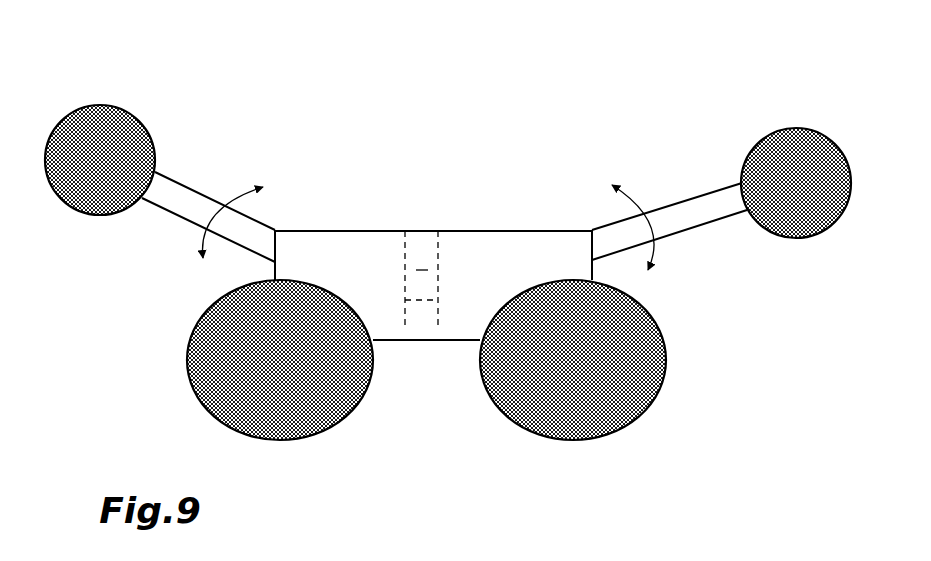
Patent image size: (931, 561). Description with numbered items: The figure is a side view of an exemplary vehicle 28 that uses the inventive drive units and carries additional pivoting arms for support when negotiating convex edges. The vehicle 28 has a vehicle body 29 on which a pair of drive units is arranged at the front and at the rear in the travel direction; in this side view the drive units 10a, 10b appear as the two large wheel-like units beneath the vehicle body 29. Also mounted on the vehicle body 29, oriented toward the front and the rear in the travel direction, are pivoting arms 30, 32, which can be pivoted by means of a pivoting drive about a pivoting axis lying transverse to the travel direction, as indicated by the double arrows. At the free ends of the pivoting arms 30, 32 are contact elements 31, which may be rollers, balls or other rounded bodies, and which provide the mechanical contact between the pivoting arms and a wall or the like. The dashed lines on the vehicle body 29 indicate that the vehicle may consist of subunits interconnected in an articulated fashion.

The drive unit 10a is at (163, 382).
The drive unit 10b is at (678, 402).
The vehicle 28 is at (444, 198).
The vehicle body 29 is at (362, 230).
The pivoting arm 30 is at (188, 203).
The contact element 31 is at (90, 133).
The pivoting arm 32 is at (688, 210).